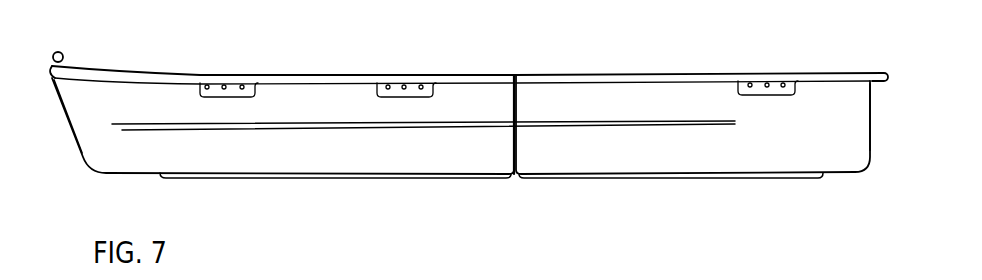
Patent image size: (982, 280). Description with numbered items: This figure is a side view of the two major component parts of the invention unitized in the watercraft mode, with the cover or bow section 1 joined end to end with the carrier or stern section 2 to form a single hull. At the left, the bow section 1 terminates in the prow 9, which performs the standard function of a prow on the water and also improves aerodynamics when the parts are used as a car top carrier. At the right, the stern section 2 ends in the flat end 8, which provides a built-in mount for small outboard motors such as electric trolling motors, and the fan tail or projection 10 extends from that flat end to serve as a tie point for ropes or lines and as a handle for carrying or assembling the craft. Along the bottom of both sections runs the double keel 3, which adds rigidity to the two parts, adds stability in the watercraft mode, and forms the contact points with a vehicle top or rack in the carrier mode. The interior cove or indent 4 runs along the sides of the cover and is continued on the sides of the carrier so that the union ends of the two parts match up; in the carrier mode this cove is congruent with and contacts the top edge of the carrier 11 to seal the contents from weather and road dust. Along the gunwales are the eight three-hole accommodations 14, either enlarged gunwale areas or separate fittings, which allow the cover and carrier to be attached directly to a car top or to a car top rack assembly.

The cover or bow section 1 is at (312, 118).
The carrier or stern section 2 is at (682, 117).
The double keel 3 is at (592, 180).
The interior cove or indent 4 is at (404, 120).
The flat end 8 is at (870, 133).
The prow 9 is at (70, 123).
The fan tail or projection 10 is at (878, 72).
The top edge of the carrier 11 is at (736, 72).
The three-hole accommodations 14 is at (253, 73).